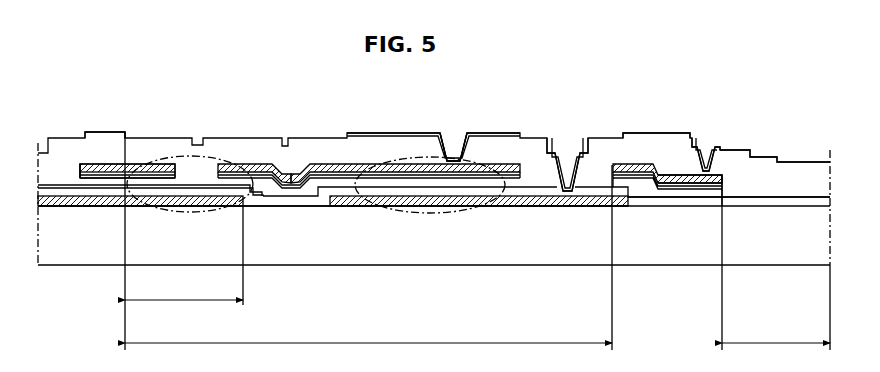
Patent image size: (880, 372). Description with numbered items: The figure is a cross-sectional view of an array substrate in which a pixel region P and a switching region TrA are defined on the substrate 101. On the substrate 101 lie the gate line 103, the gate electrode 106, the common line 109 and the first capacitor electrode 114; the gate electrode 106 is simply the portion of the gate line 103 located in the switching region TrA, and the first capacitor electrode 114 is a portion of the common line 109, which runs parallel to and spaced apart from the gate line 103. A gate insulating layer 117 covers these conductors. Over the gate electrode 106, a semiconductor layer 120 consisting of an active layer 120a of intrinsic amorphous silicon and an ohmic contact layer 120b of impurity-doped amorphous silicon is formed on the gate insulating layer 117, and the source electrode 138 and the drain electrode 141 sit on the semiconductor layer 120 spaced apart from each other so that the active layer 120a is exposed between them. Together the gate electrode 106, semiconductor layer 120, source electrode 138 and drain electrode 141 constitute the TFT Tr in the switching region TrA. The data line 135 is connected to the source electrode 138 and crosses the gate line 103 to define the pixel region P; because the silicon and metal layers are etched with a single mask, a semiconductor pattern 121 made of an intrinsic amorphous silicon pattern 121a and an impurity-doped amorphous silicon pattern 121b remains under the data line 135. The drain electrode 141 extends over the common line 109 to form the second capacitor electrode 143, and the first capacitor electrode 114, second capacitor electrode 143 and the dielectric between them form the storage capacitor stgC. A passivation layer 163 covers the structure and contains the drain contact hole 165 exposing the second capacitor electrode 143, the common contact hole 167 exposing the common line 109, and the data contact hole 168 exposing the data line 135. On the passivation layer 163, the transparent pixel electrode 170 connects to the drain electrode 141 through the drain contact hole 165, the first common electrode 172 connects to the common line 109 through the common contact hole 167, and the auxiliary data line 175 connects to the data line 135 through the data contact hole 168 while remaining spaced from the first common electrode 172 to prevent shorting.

The substrate 101 is at (794, 240).
The gate line 103 is at (57, 208).
The gate electrode 106 is at (193, 207).
The common line 109 is at (583, 207).
The first capacitor electrode 114 is at (440, 207).
The gate insulating layer 117 is at (315, 207).
The semiconductor layer 120 is at (173, 221).
The active layer 120a is at (250, 190).
The ohmic contact layer 120b is at (262, 187).
The semiconductor pattern 121 is at (401, 175).
The intrinsic amorphous silicon pattern 121a is at (118, 174).
The impurity-doped amorphous silicon pattern 121b is at (107, 169).
The data line 135 is at (92, 162).
The source electrode 138 is at (160, 163).
The drain electrode 141 is at (232, 163).
The second capacitor electrode 143 is at (395, 163).
The passivation layer 163 is at (305, 139).
The drain contact hole 165 is at (453, 135).
The common contact hole 167 is at (567, 163).
The data contact hole 168 is at (703, 140).
The pixel electrode 170 is at (405, 133).
The first common electrode 172 is at (585, 137).
The auxiliary data line 175 is at (103, 131).
The TFT Tr is at (173, 212).
The switching region TrA is at (184, 241).
The storage capacitor stgC is at (413, 213).
The pixel region P is at (477, 257).